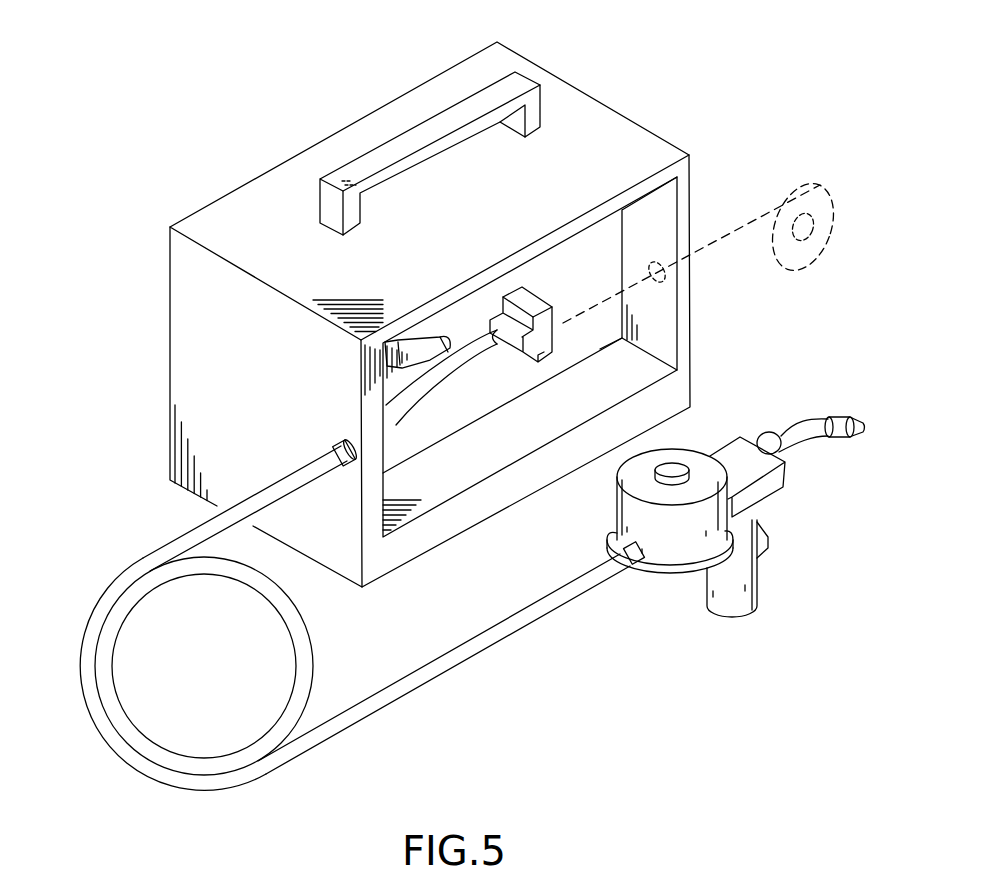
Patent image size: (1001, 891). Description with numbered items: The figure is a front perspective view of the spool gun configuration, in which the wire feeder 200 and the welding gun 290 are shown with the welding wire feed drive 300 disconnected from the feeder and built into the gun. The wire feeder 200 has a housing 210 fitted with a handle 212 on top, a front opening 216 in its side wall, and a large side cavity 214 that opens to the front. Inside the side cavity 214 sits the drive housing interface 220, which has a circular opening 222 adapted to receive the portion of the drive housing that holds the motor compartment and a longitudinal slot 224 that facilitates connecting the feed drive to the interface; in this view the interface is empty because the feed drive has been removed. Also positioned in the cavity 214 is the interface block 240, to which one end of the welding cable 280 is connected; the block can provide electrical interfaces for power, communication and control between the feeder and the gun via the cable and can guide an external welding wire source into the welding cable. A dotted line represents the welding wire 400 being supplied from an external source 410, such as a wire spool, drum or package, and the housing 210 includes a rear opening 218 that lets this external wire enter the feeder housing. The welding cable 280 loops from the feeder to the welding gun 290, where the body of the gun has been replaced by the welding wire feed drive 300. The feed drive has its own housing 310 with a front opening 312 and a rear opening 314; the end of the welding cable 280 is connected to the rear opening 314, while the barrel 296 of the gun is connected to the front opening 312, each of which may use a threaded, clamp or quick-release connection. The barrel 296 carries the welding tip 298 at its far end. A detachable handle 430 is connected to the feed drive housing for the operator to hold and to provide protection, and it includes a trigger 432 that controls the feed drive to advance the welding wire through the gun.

The wire feeder 200 is at (475, 298).
The housing 210 is at (627, 130).
The handle 212 is at (517, 80).
The side cavity 214 is at (505, 432).
The front opening 216 is at (333, 440).
The rear opening 218 is at (665, 277).
The drive housing interface 220 is at (449, 288).
The circular opening 222 is at (390, 375).
The longitudinal slot 224 is at (441, 335).
The interface block 240 is at (525, 305).
The welding cable 280 is at (372, 713).
The welding gun 290 is at (663, 577).
The barrel 296 is at (808, 417).
The welding tip 298 is at (842, 442).
The welding wire feed drive 300 is at (689, 495).
The housing 310 is at (695, 550).
The front opening 312 is at (766, 430).
The rear opening 314 is at (614, 557).
The welding wire 400 is at (757, 215).
The external source 410 is at (823, 185).
The handle 430 is at (740, 610).
The trigger 432 is at (768, 540).